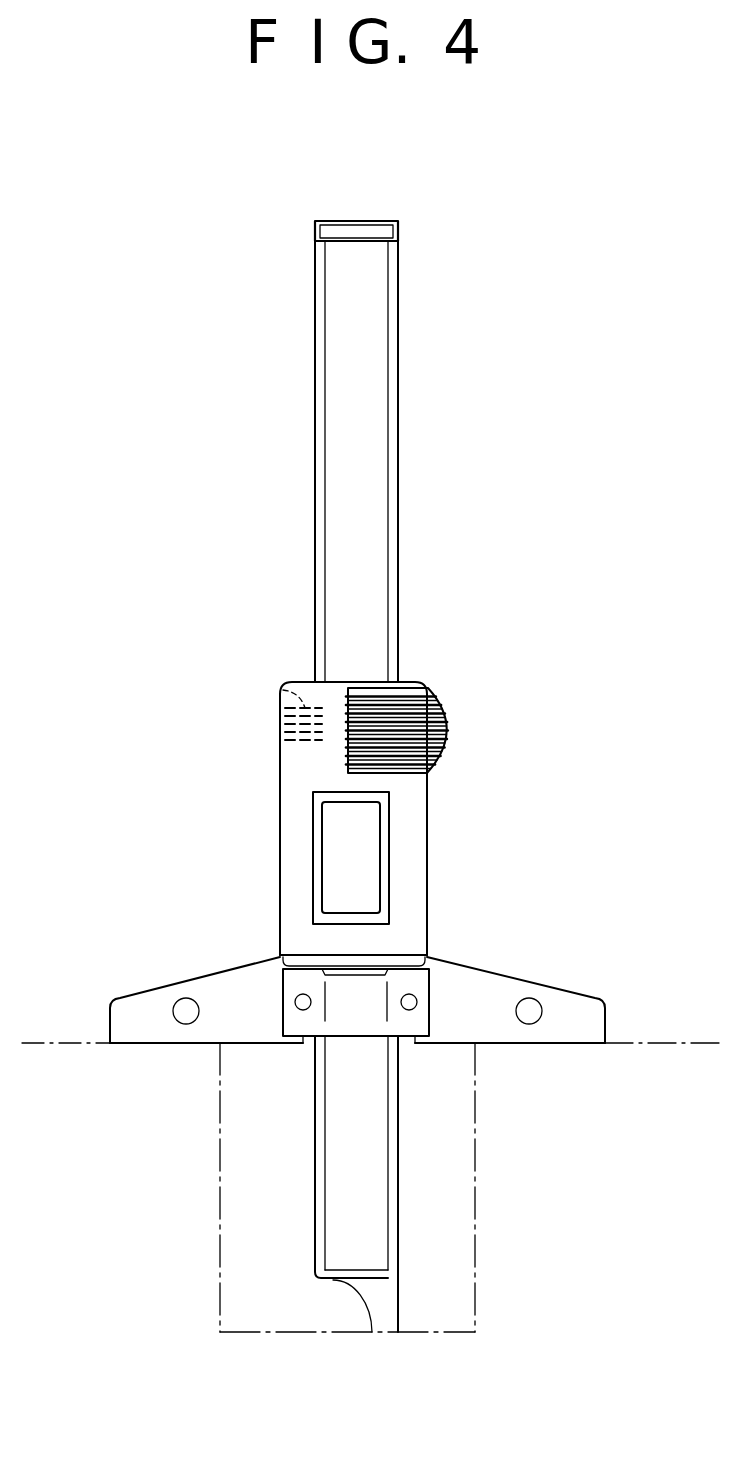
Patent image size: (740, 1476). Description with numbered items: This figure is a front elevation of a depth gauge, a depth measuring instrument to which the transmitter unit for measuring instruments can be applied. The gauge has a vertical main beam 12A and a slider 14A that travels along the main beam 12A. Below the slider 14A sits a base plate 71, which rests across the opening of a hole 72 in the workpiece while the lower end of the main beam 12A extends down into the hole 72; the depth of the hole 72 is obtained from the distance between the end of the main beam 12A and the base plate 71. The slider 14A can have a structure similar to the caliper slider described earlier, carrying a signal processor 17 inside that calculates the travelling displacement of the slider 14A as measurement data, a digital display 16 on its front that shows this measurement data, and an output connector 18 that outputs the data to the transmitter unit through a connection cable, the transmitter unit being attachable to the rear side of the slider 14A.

The main beam 12A is at (398, 388).
The slider 14A is at (420, 830).
The digital display 16 is at (313, 868).
The signal processor 17 is at (408, 893).
The output connector 18 is at (285, 692).
The base plate 71 is at (122, 1002).
The hole 72 is at (478, 1206).